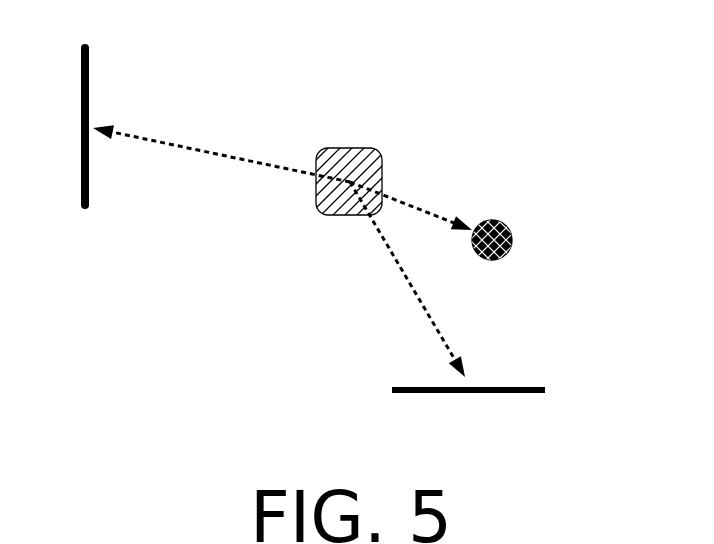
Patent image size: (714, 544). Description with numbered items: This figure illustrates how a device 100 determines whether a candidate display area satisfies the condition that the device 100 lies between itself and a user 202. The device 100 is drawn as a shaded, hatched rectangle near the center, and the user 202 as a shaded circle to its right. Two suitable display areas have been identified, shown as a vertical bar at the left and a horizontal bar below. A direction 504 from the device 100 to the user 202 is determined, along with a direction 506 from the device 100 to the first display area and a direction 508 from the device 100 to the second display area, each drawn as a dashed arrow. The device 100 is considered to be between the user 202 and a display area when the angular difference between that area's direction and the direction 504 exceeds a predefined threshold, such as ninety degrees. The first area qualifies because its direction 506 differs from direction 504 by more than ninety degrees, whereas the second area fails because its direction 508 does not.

The device 100 is at (348, 153).
The user 202 is at (508, 225).
The direction from the device to the user 504 is at (415, 208).
The direction from the device to the first display area 506 is at (177, 145).
The direction from the device to the second display area 508 is at (402, 273).